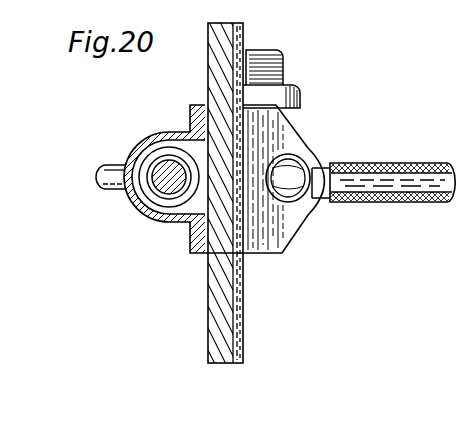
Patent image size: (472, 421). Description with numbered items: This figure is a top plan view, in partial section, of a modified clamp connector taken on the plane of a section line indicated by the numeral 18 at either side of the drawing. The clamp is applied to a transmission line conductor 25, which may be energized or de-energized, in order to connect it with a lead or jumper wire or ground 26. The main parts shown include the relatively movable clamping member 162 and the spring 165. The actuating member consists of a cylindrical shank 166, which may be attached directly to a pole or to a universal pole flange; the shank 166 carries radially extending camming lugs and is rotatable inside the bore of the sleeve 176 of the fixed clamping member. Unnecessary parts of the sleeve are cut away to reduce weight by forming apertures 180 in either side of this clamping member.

The transmission line conductor 25 is at (209, 77).
The relatively movable clamping member 162 is at (279, 129).
The lead or jumper wire or ground 26 is at (386, 163).
The sleeve 176 is at (112, 160).
The cylindrical shank 166 is at (160, 181).
The spring 165 is at (138, 202).
The apertures 180 is at (160, 224).
The section line 18 is at (80, 178).